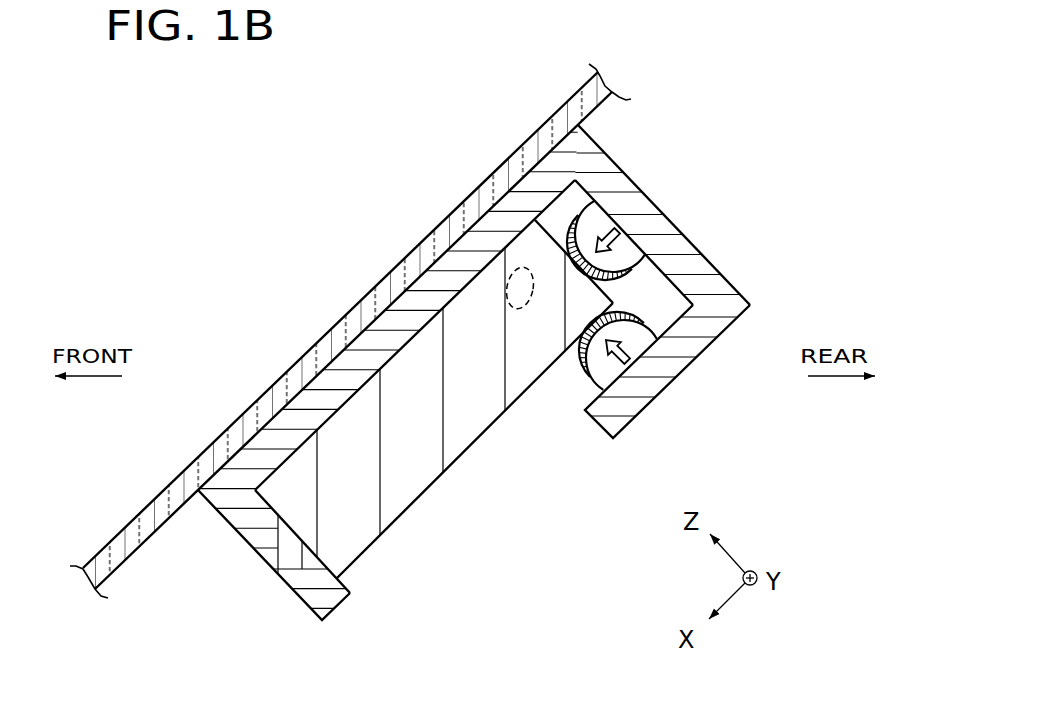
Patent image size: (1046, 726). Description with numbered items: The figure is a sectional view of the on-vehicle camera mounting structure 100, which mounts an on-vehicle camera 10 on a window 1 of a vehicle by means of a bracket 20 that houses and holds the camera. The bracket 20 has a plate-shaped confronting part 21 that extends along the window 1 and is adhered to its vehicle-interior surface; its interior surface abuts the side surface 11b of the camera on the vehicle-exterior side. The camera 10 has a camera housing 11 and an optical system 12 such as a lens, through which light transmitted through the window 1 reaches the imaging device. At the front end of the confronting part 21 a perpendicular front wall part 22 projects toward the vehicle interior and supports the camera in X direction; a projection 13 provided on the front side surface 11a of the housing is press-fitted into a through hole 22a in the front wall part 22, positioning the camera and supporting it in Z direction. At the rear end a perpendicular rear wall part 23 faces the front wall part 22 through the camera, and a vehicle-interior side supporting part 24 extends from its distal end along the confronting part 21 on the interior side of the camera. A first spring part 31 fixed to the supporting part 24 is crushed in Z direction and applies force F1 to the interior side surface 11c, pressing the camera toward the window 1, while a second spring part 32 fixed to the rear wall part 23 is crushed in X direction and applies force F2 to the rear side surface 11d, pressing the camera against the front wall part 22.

The on-vehicle camera mounting structure 100 is at (322, 203).
The window 1 is at (200, 467).
The confronting part 21 is at (350, 340).
The optical system 12 is at (507, 282).
The on-vehicle camera 10 is at (433, 494).
The camera housing 11 is at (486, 455).
The side surface 11a is at (322, 568).
The side surface 11b is at (296, 441).
The side surface 11c is at (518, 404).
The side surface 11d is at (547, 207).
The projection 13 is at (268, 553).
The bracket 20 is at (748, 243).
The front wall part 22 is at (240, 537).
The through hole 22a is at (274, 567).
The rear wall part 23 is at (671, 220).
The vehicle-interior side supporting part 24 is at (689, 366).
The first spring part 31 is at (655, 313).
The second spring part 32 is at (652, 281).
The force F1 is at (622, 362).
The force F2 is at (608, 232).